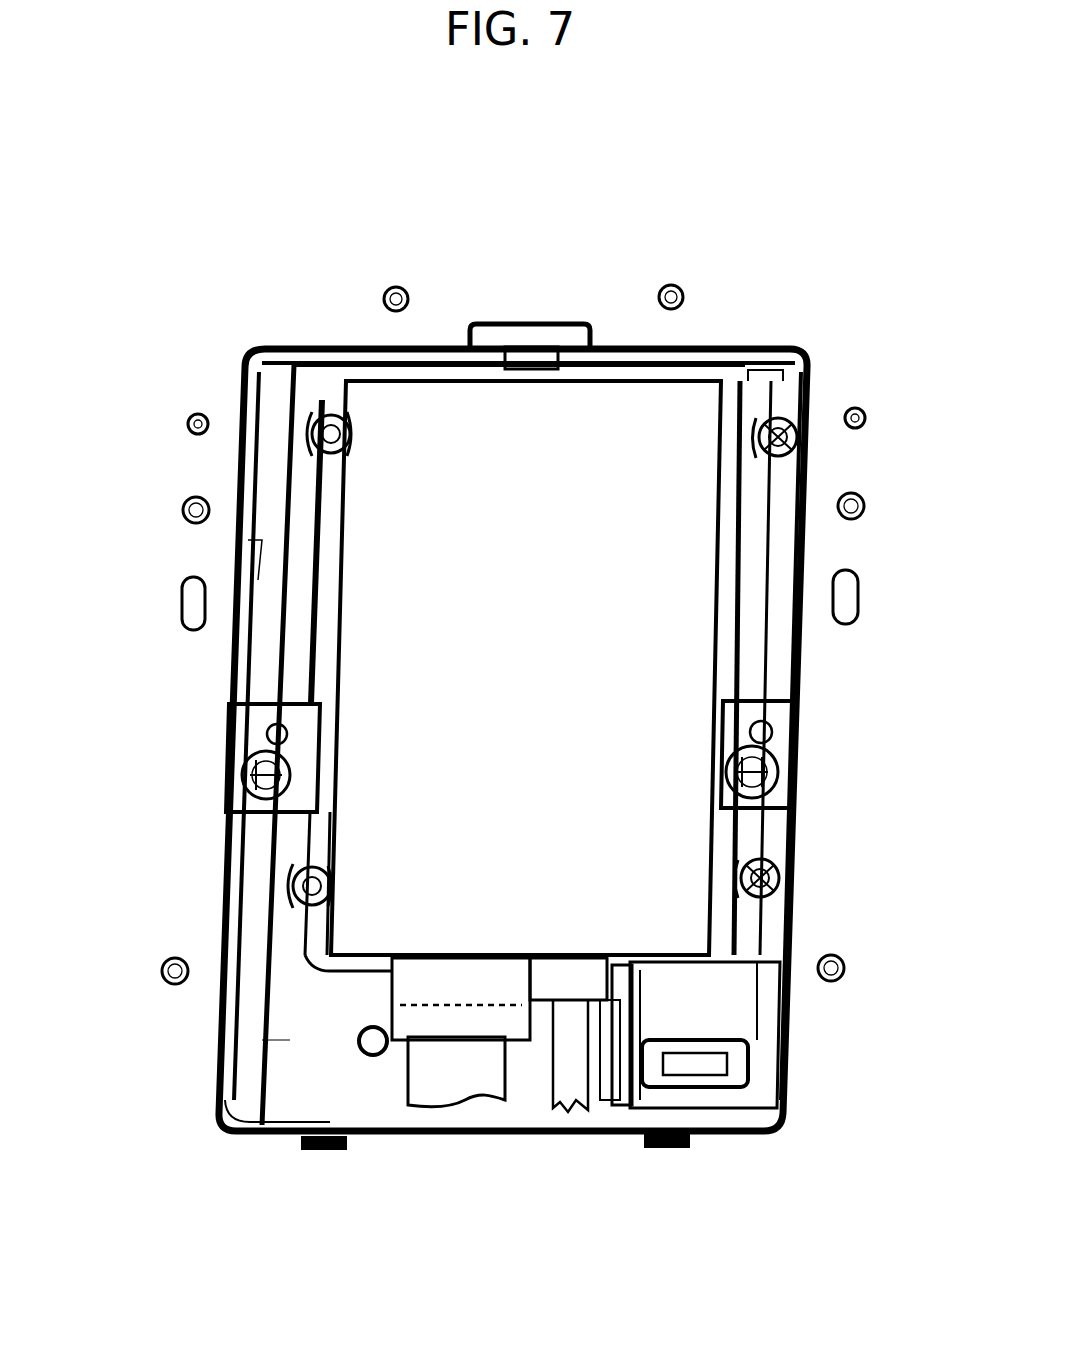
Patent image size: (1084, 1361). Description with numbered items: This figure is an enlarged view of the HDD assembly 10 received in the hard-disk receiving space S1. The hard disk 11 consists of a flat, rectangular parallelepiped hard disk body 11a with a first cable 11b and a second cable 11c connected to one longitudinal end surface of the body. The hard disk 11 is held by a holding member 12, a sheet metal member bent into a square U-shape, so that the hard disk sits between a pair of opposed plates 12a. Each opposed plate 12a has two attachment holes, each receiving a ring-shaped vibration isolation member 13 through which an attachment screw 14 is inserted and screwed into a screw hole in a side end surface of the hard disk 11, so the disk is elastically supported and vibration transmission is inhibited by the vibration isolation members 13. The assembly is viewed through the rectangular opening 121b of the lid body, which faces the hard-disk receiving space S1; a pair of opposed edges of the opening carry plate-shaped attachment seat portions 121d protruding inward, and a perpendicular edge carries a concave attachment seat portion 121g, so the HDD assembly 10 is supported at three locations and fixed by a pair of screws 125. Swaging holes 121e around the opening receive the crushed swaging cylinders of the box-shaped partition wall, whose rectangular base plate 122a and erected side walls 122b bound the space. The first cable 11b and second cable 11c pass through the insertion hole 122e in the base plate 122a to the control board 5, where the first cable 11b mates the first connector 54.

The HDD assembly 10 is at (540, 207).
The hard disk 11 is at (533, 455).
The holding member 12 is at (333, 528).
The hard disk body 11a is at (468, 893).
The first cable 11b is at (472, 1070).
The second cable 11c is at (571, 1073).
The opposed plate 12a is at (320, 626).
The vibration isolation member 13 is at (340, 423).
The attachment screw 14 is at (311, 428).
The opening 121b is at (240, 575).
The attachment seat portion 121d is at (267, 735).
The swaging hole 121e is at (398, 287).
The concave attachment seat portion 121g is at (568, 335).
The base plate 122a is at (358, 1088).
The side wall 122b is at (247, 1022).
The insertion hole 122e is at (656, 1095).
The screw 125 is at (244, 780).
The control board 5 is at (755, 1000).
The first connector 54 is at (690, 1066).
The hard-disk receiving space S1 is at (306, 1063).